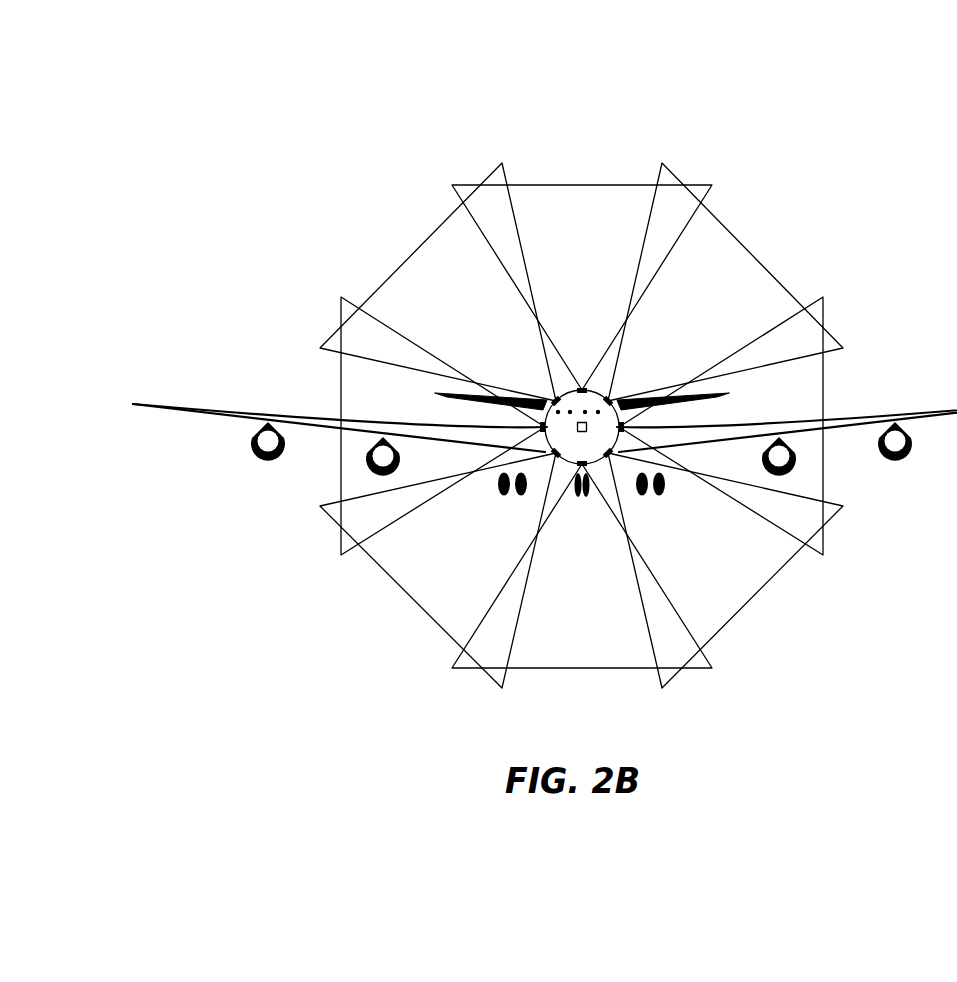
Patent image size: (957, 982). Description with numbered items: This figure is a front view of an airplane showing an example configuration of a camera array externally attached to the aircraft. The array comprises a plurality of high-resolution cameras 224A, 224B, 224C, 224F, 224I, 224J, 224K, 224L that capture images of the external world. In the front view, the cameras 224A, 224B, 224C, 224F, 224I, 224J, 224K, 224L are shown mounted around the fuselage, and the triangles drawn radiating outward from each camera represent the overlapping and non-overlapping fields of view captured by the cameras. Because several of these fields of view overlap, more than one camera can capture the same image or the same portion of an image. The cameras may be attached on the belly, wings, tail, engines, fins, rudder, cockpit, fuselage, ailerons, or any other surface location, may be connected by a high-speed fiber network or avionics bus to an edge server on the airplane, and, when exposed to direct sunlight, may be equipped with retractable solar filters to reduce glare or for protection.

The high-resolution camera 224A is at (555, 398).
The high-resolution camera 224B is at (553, 457).
The high-resolution camera 224C is at (547, 427).
The high-resolution camera 224F is at (581, 388).
The high-resolution camera 224I is at (620, 428).
The high-resolution camera 224J is at (609, 456).
The high-resolution camera 224K is at (608, 398).
The high-resolution camera 224L is at (581, 467).